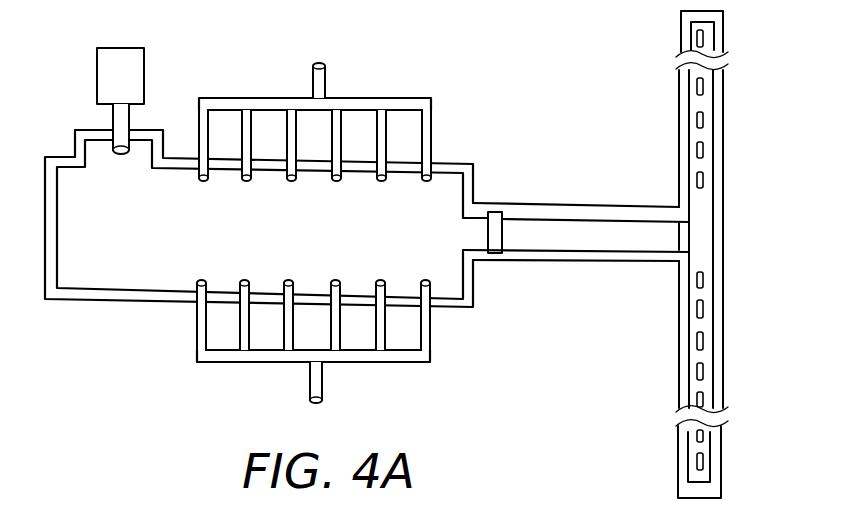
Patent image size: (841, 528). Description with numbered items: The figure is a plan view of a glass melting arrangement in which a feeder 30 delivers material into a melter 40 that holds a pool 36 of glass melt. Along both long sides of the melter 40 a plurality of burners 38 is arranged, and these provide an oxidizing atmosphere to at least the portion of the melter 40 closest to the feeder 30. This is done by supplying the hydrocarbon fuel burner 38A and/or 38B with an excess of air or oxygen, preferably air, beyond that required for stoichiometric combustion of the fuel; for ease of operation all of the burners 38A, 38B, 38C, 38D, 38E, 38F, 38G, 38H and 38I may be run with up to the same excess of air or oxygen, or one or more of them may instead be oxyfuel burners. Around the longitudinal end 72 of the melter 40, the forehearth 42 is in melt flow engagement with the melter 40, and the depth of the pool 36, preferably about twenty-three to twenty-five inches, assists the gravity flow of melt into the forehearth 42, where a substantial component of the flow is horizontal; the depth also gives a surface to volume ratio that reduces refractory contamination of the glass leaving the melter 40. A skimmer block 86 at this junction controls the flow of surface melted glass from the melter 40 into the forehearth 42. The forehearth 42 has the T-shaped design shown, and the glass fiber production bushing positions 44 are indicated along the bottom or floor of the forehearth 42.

The feeder 30 is at (97, 63).
The pool 36 is at (123, 230).
The burners 38 is at (432, 125).
The hydrocarbon fuel burner 38A is at (198, 122).
The hydrocarbon fuel burner 38B is at (242, 137).
The burner 38C is at (240, 328).
The burner 38D is at (282, 122).
The burner 38E is at (283, 328).
The burner 38F is at (353, 112).
The burner 38G is at (340, 330).
The burner 38H is at (377, 133).
The burner 38I is at (385, 328).
The melter 40 is at (88, 302).
The forehearth 42 is at (698, 233).
The bushing positions 44 is at (697, 307).
The longitudinal end 72 is at (477, 175).
The skimmer block 86 is at (505, 228).